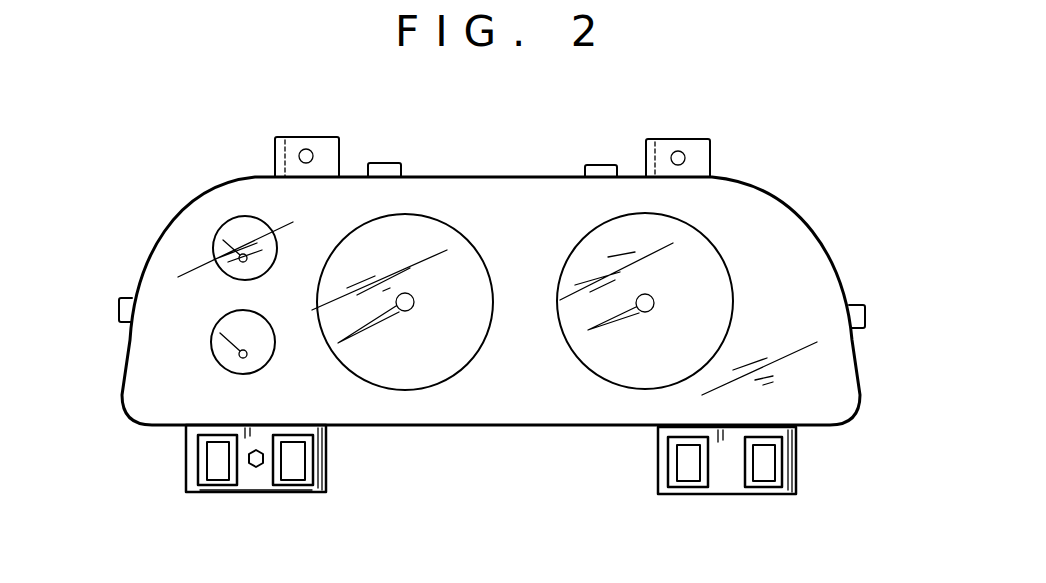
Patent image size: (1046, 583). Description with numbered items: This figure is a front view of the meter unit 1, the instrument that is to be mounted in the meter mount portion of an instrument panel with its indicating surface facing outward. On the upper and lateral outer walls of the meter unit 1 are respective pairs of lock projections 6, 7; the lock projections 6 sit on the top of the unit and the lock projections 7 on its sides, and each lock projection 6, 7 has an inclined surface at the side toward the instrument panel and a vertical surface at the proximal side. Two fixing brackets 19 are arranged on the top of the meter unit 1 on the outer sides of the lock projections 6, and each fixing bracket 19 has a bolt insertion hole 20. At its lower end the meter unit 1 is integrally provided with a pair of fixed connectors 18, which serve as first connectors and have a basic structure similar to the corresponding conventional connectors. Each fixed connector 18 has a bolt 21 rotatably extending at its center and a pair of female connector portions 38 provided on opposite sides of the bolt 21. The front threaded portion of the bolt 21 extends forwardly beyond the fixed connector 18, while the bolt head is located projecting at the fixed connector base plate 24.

The meter unit 1 is at (804, 186).
The lock projection 6 is at (385, 162).
The lock projection 7 is at (122, 298).
The fixed connector 18 is at (328, 469).
The fixing bracket 19 is at (320, 140).
The bolt insertion hole 20 is at (303, 152).
The bolt 21 is at (256, 468).
The fixed connector base plate 24 is at (236, 491).
The female connector portion 38 is at (212, 458).